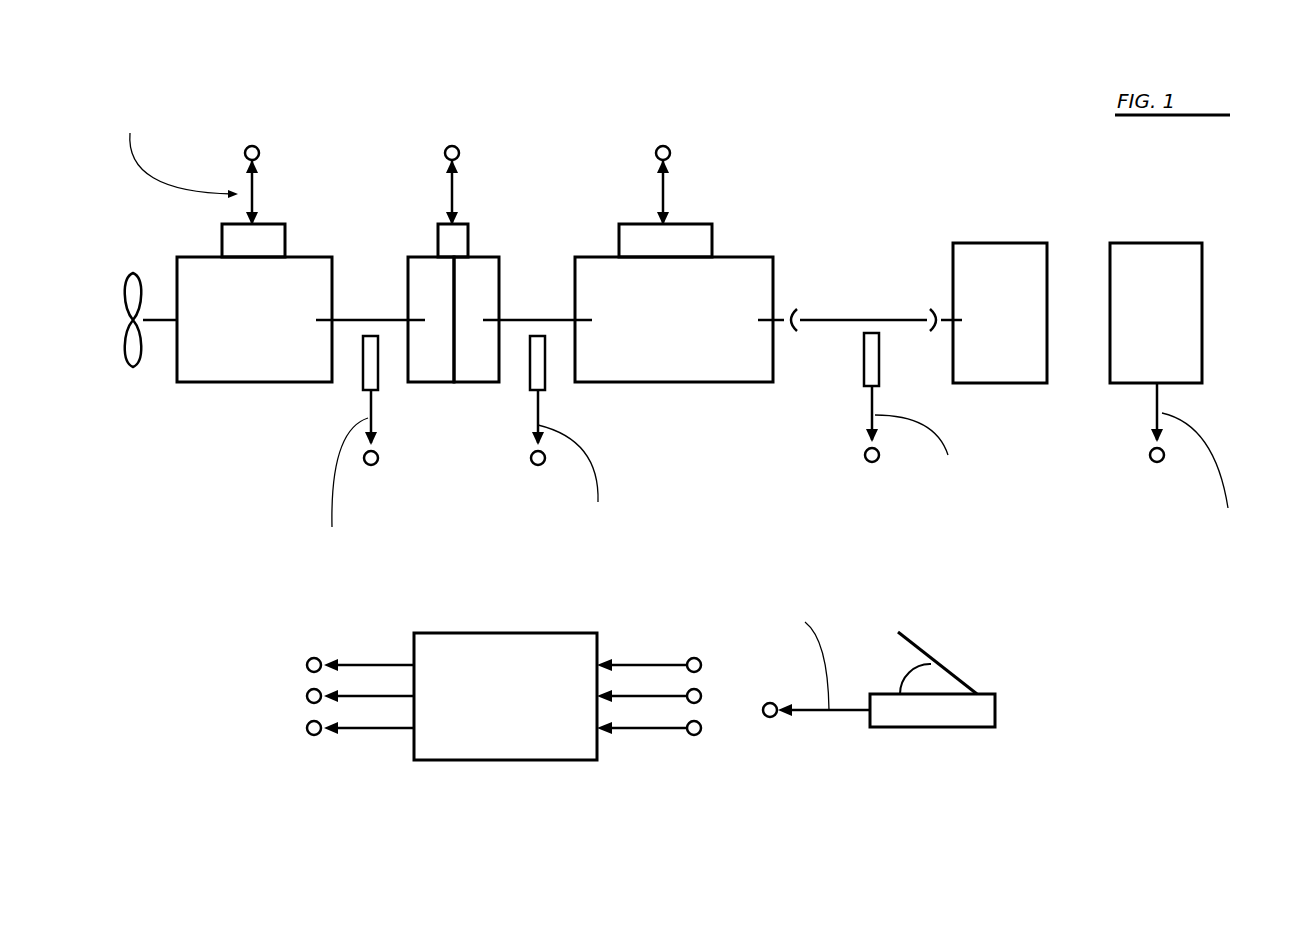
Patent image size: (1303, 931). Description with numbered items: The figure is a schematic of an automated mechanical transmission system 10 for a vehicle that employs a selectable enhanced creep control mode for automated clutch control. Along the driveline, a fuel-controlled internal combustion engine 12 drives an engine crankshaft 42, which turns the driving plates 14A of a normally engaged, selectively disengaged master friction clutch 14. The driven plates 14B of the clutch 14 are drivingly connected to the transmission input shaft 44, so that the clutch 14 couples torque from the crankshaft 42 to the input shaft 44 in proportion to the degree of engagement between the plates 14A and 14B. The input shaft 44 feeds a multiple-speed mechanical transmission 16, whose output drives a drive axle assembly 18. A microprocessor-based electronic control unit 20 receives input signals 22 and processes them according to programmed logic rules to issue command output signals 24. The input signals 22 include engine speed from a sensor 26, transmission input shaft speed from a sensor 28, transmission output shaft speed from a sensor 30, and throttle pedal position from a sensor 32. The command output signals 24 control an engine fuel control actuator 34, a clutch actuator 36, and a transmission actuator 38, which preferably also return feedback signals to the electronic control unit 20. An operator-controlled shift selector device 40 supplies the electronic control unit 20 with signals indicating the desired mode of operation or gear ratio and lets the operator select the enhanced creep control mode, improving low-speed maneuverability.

The automated mechanical transmission system 10 is at (589, 95).
The internal combustion engine 12 is at (272, 337).
The master friction clutch 14 is at (462, 433).
The driving plates 14A is at (424, 372).
The driven plates 14B is at (484, 355).
The multiple-speed mechanical transmission 16 is at (645, 335).
The drive axle assembly 18 is at (1015, 292).
The electronic control unit 20 is at (563, 749).
The input signals 22 is at (643, 764).
The command output signals 24 is at (370, 764).
The engine speed sensor 26 is at (365, 372).
The input shaft speed sensor 28 is at (540, 375).
The output shaft speed sensor 30 is at (864, 362).
The throttle pedal position sensor 32 is at (949, 710).
The engine fuel control actuator 34 is at (270, 240).
The clutch actuator 36 is at (455, 240).
The transmission actuator 38 is at (672, 240).
The shift selector device 40 is at (1145, 353).
The engine crankshaft 42 is at (350, 320).
The transmission input shaft 44 is at (512, 320).